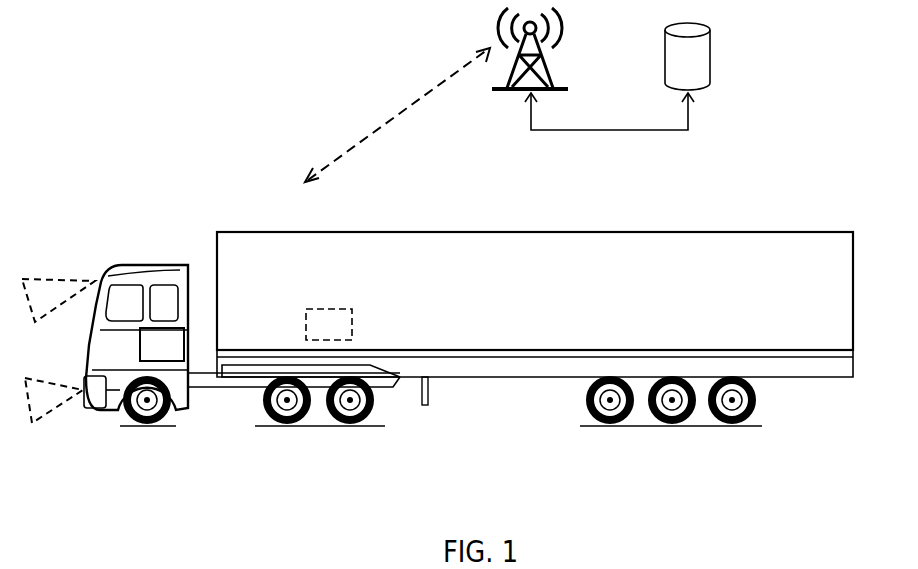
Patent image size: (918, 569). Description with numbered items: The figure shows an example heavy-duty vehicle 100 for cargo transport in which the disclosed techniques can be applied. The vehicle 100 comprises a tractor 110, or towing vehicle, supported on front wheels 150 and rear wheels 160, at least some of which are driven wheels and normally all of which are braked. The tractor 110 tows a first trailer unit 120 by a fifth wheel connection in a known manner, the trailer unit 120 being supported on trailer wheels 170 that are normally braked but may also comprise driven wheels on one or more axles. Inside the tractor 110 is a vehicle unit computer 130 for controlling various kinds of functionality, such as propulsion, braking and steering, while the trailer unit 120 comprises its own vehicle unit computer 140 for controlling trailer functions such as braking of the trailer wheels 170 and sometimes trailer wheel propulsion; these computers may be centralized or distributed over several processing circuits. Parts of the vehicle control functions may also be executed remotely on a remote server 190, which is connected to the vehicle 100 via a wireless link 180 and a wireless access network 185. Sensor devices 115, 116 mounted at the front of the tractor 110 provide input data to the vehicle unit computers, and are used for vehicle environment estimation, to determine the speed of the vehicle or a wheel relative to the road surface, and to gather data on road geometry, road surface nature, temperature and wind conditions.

The vehicle 100 is at (98, 161).
The tractor 110 is at (181, 264).
The sensor device 115 is at (62, 278).
The sensor device 116 is at (62, 382).
The first trailer unit 120 is at (390, 232).
The vehicle unit computer 130 is at (162, 344).
The vehicle unit computer 140 is at (329, 324).
The front wheels 150 is at (118, 446).
The rear wheels 160 is at (282, 447).
The trailer wheels 170 is at (736, 456).
The wireless link 180 is at (397, 115).
The wireless access network 185 is at (566, 84).
The remote server 190 is at (713, 68).